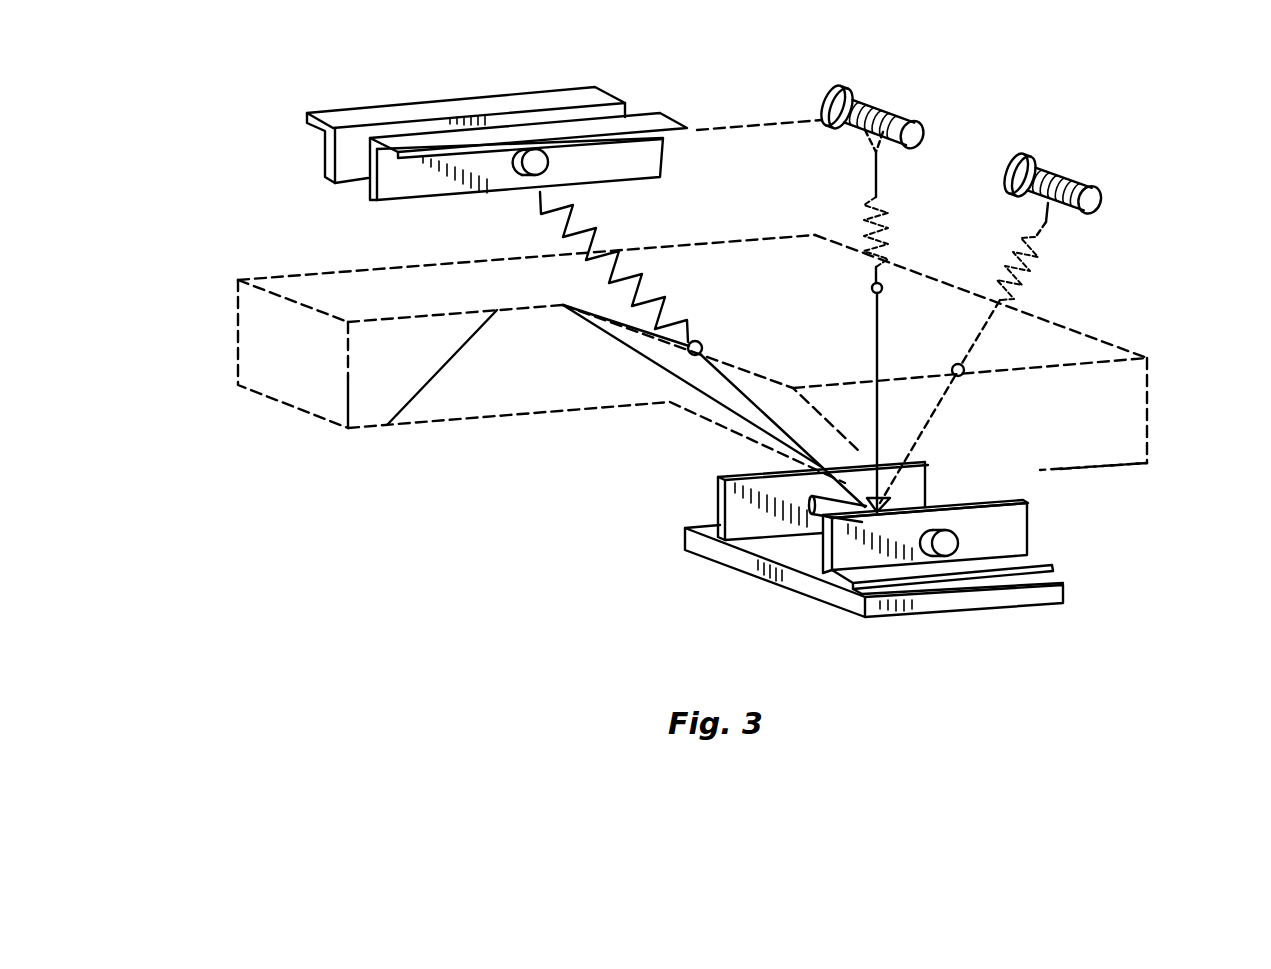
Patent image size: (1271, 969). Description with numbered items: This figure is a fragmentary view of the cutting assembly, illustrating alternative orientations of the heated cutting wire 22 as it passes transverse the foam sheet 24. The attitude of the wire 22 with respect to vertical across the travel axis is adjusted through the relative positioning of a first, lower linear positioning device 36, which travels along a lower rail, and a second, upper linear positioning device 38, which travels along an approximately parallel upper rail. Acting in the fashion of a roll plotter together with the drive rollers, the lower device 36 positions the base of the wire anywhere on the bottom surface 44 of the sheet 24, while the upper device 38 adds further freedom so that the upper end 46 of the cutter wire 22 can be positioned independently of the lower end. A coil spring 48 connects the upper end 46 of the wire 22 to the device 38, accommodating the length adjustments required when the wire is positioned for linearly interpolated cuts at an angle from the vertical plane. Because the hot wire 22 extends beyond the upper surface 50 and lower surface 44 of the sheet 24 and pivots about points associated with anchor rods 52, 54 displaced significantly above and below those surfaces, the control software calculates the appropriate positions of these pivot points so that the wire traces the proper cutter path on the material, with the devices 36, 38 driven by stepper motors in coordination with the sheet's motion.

The heated wire 22 is at (760, 418).
The sheet 24 is at (1130, 408).
The first linear positioning device 36 is at (1047, 558).
The second linear positioning device 38 is at (307, 119).
The bottom surface 44 is at (1097, 468).
The upper end 46 is at (690, 353).
The coil spring 48 is at (590, 247).
The upper surface 50 is at (1103, 358).
The anchor rod 52 is at (945, 548).
The anchor rod 54 is at (913, 135).